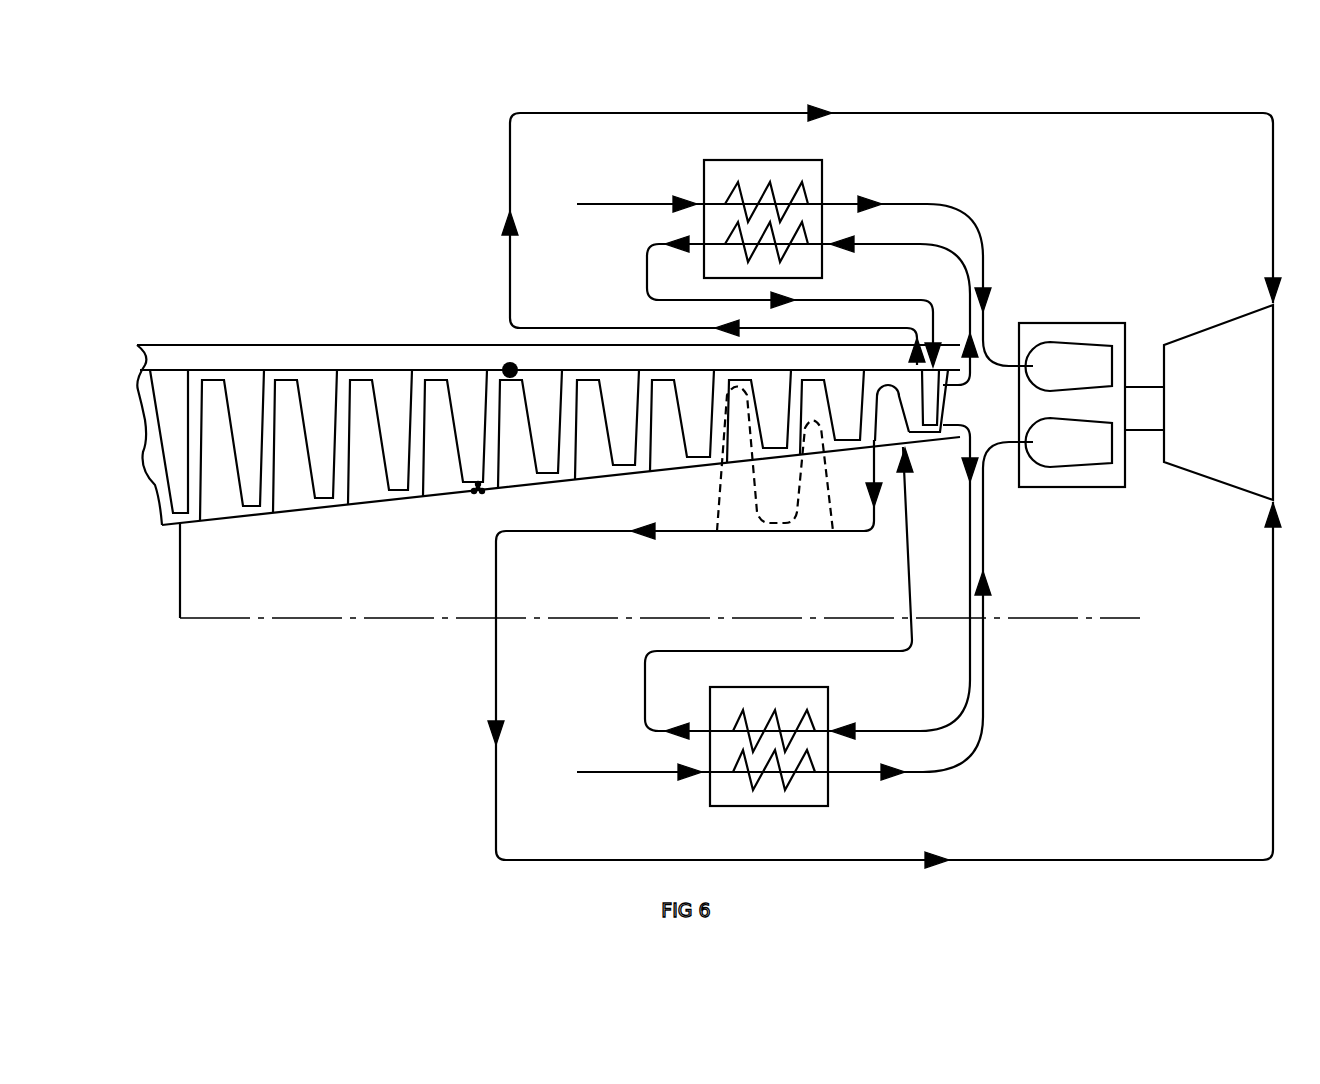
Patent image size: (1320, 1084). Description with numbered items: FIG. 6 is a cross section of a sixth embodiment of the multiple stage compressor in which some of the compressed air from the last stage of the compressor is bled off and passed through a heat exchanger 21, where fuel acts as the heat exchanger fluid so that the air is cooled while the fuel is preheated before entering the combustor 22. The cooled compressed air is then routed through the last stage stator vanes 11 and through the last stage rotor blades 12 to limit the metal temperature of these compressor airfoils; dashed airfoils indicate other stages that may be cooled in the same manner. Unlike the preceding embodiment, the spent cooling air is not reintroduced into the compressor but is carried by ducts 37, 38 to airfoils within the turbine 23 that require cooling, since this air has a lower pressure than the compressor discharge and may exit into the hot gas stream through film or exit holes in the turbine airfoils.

The last stage stator vanes 11 is at (927, 417).
The last stage rotor blades 12 is at (890, 425).
The heat exchanger 21 is at (754, 175).
The combustor 22 is at (1067, 363).
The turbine 23 is at (1217, 353).
The first bleed air duct 37 is at (507, 177).
The second bleed air duct 38 is at (495, 783).